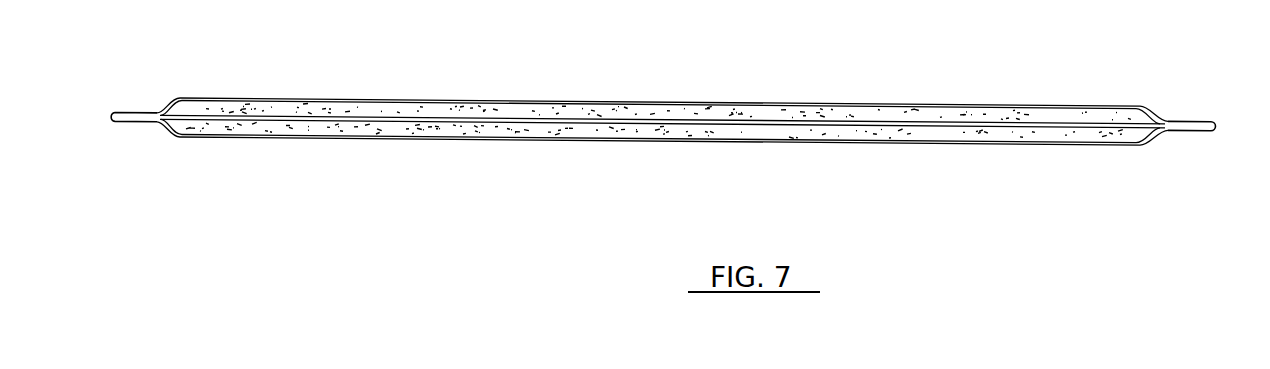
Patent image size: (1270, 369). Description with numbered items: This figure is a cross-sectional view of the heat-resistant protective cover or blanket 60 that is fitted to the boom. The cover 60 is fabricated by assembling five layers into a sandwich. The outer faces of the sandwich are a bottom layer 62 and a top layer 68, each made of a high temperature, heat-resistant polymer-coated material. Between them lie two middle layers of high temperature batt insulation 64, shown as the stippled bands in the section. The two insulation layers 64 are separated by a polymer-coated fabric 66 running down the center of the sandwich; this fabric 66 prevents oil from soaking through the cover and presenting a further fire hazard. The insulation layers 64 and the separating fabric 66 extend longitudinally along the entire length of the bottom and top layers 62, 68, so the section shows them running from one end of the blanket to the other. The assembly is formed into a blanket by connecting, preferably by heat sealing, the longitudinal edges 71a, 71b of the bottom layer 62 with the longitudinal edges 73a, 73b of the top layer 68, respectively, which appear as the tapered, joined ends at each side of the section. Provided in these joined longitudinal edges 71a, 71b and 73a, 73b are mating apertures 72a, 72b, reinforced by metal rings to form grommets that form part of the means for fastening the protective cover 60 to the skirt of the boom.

The protective cover or blanket 60 is at (670, 116).
The bottom layer 62 is at (526, 140).
The middle layers of high temperature batt insulation 64 is at (370, 78).
The polymer-coated fabric 66 is at (720, 127).
The top layer 68 is at (559, 104).
The longitudinal edge 71a is at (144, 126).
The longitudinal edge 71b is at (1188, 133).
The mating aperture 72a is at (150, 63).
The mating aperture 72b is at (1188, 119).
The longitudinal edge 73a is at (151, 110).
The longitudinal edge 73b is at (1178, 118).